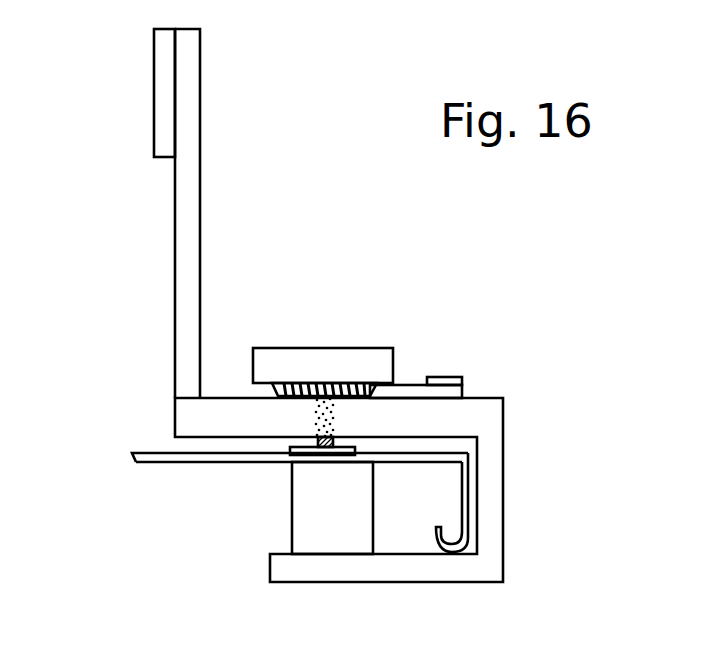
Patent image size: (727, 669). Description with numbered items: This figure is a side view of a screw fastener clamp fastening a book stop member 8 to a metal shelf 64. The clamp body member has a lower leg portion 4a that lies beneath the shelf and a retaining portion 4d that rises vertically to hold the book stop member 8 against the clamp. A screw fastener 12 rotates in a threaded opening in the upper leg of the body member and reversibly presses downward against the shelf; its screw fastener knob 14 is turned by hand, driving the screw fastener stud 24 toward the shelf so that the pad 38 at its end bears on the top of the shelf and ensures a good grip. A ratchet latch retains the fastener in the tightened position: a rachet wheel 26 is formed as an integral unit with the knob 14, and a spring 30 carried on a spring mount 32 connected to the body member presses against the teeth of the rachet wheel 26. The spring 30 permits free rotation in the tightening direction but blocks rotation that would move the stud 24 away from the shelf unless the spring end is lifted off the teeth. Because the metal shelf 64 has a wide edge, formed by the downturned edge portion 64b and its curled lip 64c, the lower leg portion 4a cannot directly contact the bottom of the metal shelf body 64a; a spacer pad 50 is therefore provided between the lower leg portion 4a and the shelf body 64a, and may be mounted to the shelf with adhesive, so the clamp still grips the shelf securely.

The lower leg portion 4a is at (305, 572).
The retaining portion 4d is at (188, 83).
The book stop member 8 is at (168, 130).
The screw fastener 12 is at (280, 348).
The screw fastener knob 14 is at (368, 362).
The screw fastener stud 24 is at (292, 449).
The rachet wheel 26 is at (308, 383).
The spring 30 is at (417, 393).
The spring mount 32 is at (452, 383).
The pad 38 is at (302, 451).
The spacer pad 50 is at (353, 510).
The metal shelf 64 is at (168, 463).
The metal shelf body 64a is at (228, 462).
The metal shelf edge portion 64b is at (467, 501).
The metal shelf edge lip 64c is at (440, 548).